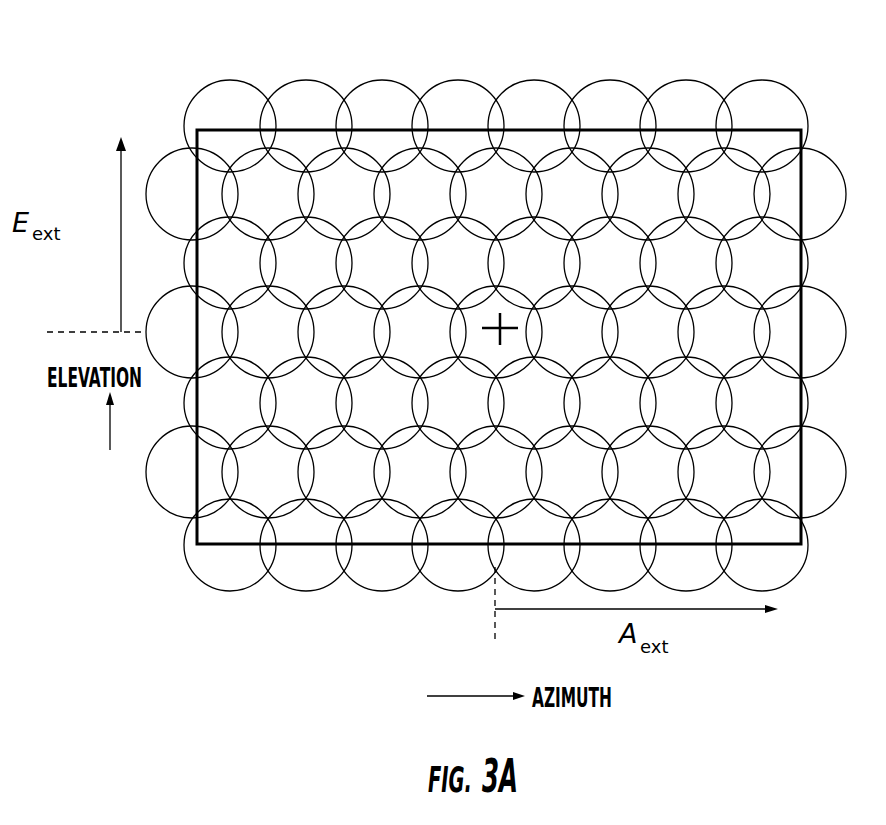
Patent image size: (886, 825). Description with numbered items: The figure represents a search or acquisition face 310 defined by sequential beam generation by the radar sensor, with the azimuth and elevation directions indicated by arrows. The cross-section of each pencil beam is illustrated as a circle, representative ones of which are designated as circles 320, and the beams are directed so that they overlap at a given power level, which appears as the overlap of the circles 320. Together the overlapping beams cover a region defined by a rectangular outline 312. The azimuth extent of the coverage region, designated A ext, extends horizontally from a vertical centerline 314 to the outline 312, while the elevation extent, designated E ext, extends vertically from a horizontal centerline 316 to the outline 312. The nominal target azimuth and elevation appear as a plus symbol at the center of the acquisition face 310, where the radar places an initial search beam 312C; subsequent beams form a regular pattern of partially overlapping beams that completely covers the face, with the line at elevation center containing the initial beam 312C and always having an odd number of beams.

The acquisition face 310 is at (283, 652).
The rectangular outline 312 is at (537, 115).
The initial search beam 312C is at (545, 347).
The vertical centerline 314 is at (493, 600).
The horizontal centerline 316 is at (90, 331).
The circles 320 is at (240, 88).